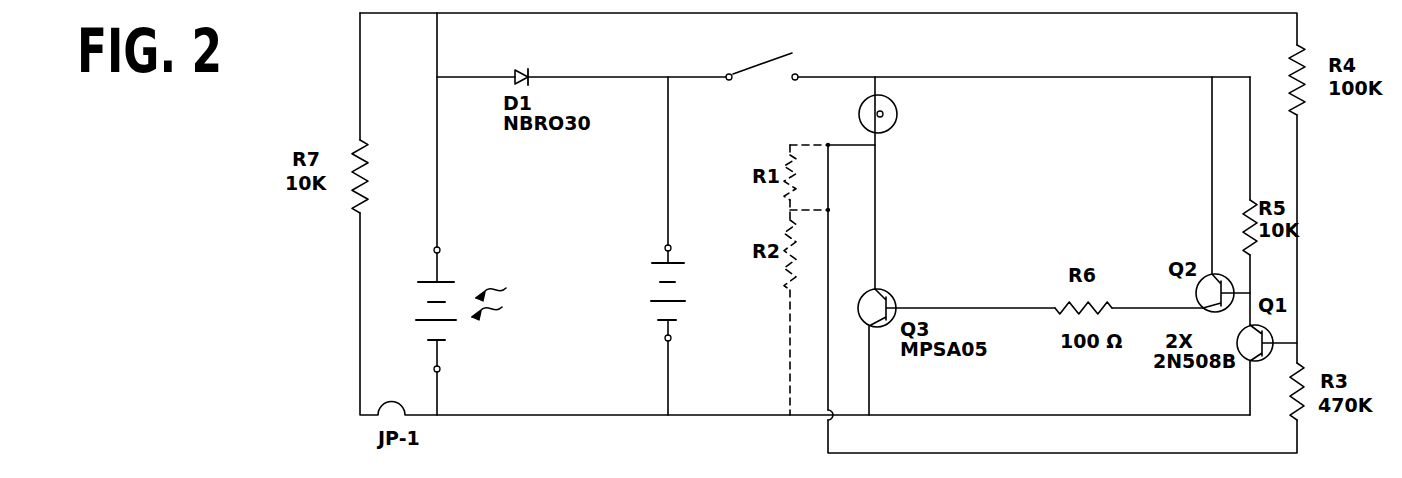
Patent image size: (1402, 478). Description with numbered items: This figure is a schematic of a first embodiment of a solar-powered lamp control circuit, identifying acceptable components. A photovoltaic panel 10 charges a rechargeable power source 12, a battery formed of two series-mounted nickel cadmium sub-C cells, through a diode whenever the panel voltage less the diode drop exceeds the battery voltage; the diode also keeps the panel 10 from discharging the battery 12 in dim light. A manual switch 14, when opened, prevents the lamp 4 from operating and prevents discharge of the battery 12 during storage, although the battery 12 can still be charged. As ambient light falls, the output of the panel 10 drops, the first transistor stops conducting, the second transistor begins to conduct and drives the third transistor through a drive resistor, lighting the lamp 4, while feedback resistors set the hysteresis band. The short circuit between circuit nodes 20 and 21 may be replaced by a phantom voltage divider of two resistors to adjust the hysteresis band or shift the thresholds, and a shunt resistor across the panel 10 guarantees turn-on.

The lamp 4 is at (859, 111).
The photovoltaic panel 10 is at (392, 303).
The rechargeable power source 12 is at (717, 300).
The manual switch 14 is at (746, 68).
The circuit node 20 is at (830, 147).
The circuit node 21 is at (830, 212).